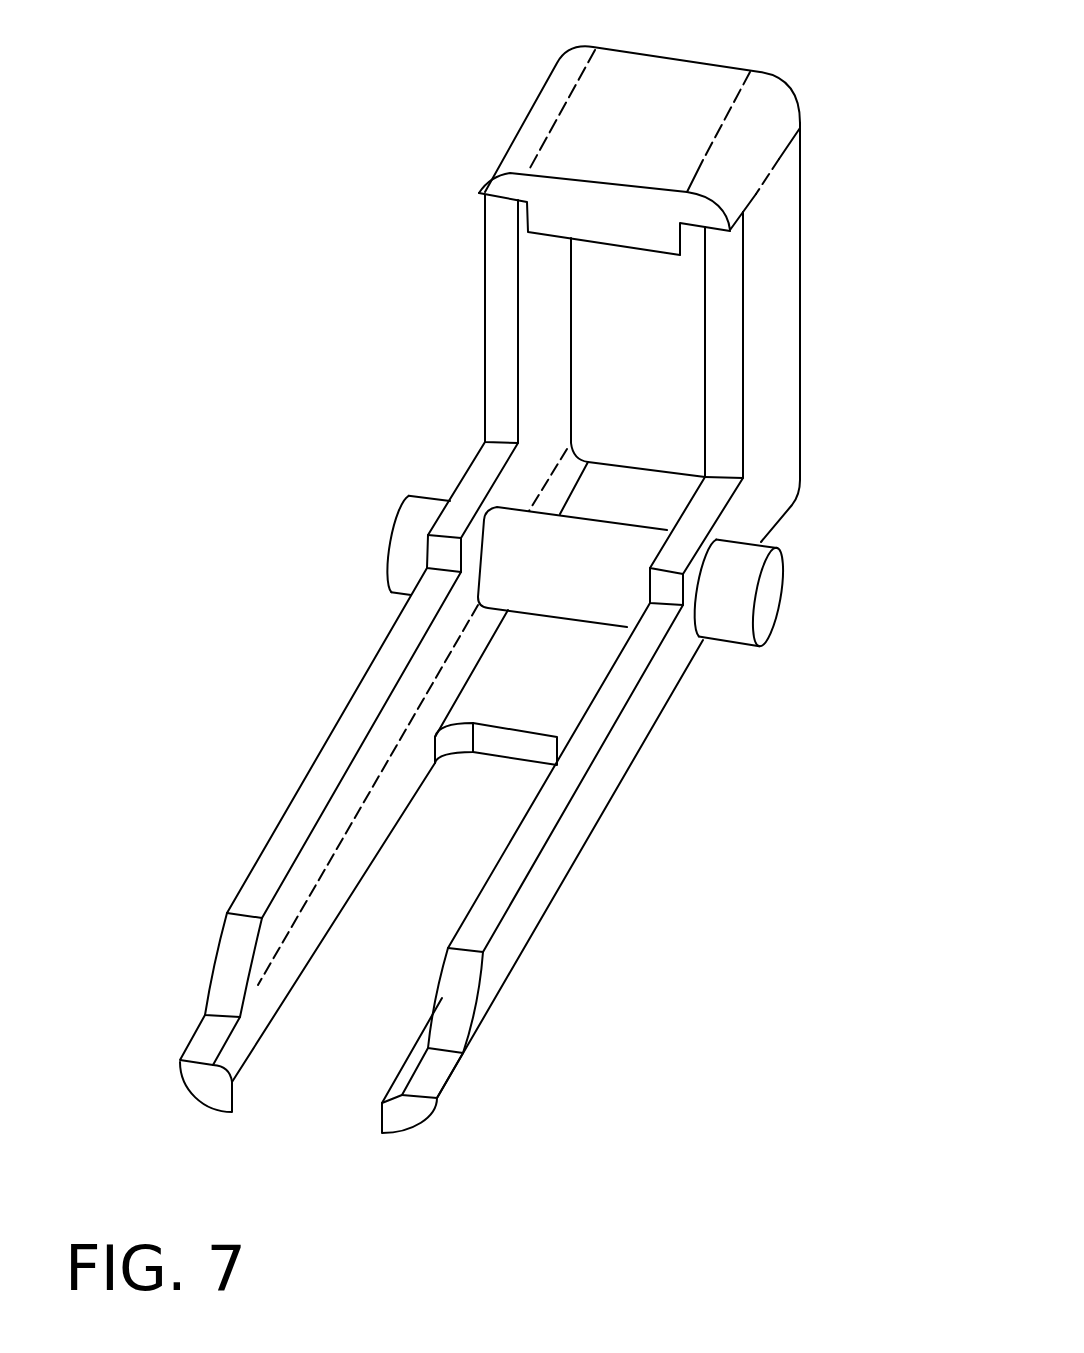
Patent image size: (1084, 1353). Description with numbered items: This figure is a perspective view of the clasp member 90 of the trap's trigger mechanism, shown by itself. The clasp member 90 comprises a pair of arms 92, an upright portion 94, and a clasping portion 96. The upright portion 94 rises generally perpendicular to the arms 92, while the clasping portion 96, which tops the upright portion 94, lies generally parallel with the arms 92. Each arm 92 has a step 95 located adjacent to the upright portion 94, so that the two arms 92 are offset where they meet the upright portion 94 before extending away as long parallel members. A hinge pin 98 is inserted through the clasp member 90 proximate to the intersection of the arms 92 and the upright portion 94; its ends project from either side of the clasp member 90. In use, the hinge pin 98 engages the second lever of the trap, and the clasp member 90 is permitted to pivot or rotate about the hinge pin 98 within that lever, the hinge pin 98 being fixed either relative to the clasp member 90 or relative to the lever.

The clasp member 90 is at (344, 301).
The arms 92 is at (270, 876).
The upright portion 94 is at (773, 340).
The step 95 is at (473, 473).
The clasping portion 96 is at (667, 82).
The hinge pin 98 is at (770, 597).